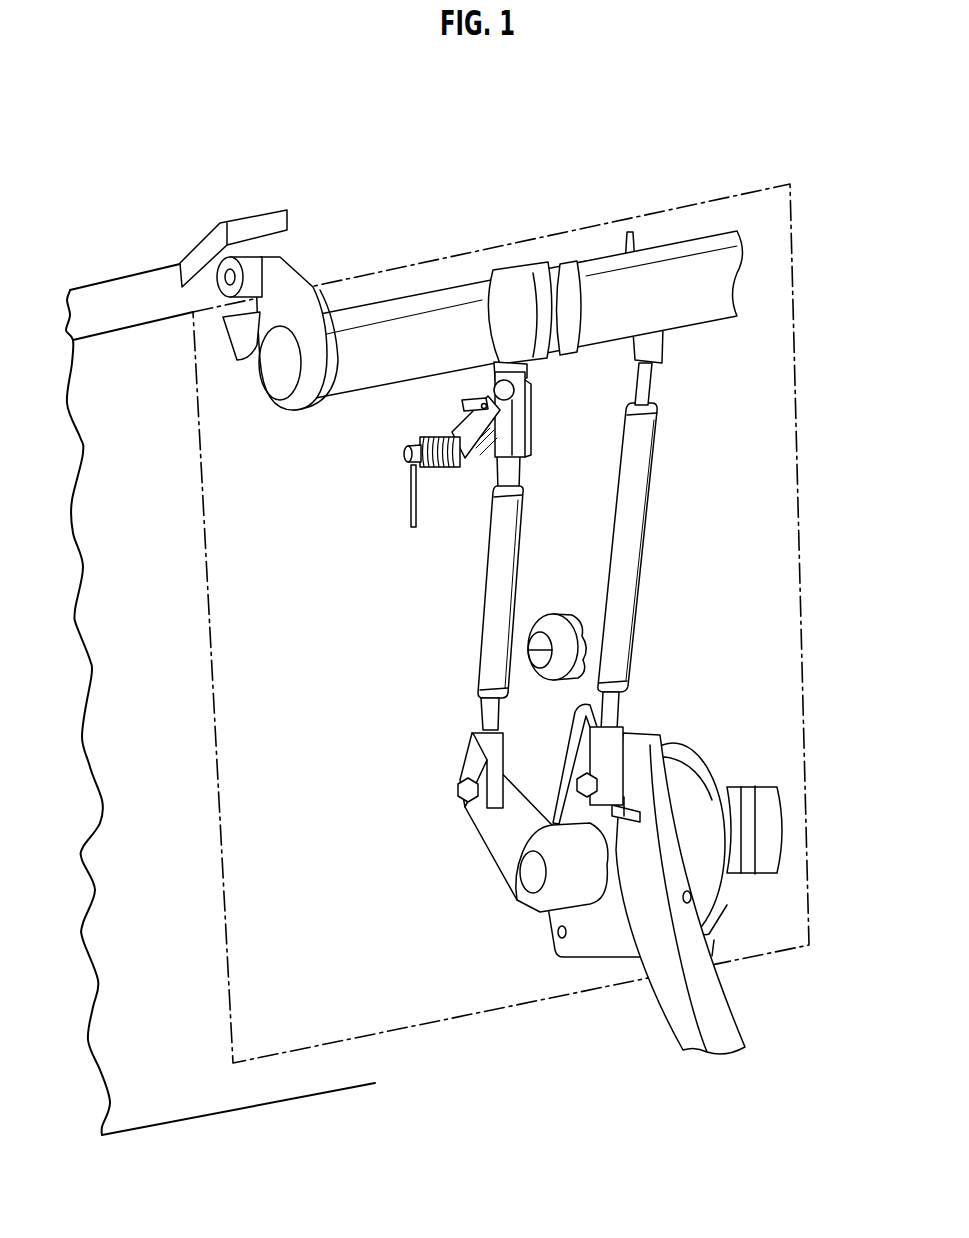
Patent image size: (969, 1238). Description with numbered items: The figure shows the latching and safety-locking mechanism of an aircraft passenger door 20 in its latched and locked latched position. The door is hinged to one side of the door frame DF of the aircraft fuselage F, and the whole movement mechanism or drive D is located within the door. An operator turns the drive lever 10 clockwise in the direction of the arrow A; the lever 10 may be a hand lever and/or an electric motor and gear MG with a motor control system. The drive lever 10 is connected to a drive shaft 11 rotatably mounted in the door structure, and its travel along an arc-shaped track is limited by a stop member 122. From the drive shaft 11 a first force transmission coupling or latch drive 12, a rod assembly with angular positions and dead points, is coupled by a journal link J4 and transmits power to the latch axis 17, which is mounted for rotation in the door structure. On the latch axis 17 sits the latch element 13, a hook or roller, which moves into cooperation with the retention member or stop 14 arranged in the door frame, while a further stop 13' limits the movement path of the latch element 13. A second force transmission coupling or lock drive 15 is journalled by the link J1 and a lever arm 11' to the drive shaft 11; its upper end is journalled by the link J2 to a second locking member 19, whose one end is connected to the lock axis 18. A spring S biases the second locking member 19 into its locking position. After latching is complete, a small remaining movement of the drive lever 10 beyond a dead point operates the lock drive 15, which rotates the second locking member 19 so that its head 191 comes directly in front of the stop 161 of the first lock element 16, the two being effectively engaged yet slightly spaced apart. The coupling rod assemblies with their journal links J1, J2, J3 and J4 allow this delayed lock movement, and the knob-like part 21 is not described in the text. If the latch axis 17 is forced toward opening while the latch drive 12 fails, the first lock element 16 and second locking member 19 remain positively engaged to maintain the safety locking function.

The drive lever 10 is at (672, 1003).
The drive shaft 11 is at (504, 875).
The lever arm 11' is at (514, 835).
The latch drive 12 is at (653, 538).
The latch element 13 is at (277, 310).
The further stop 13' is at (192, 350).
The retention member 14 is at (237, 228).
The lock drive 15 is at (485, 571).
The first lock element 16 is at (498, 273).
The latch axis 17 is at (697, 250).
The lock axis 18 is at (405, 450).
The second locking member 19 is at (477, 430).
The passenger door 20 is at (203, 553).
The knob 21 is at (537, 655).
The stop member 122 is at (627, 813).
The stop of the first locking member 161 is at (527, 378).
The head of the second locking member 191 is at (531, 402).
The door frame DF is at (132, 300).
The aircraft fuselage F is at (83, 737).
The spring S is at (440, 468).
The drive D is at (378, 670).
The arrow A is at (785, 988).
The journal link J1 is at (463, 788).
The journal link J2 is at (497, 380).
The journal link J3 is at (667, 323).
The journal link J4 is at (587, 787).
The electric motor and gear MG is at (668, 737).